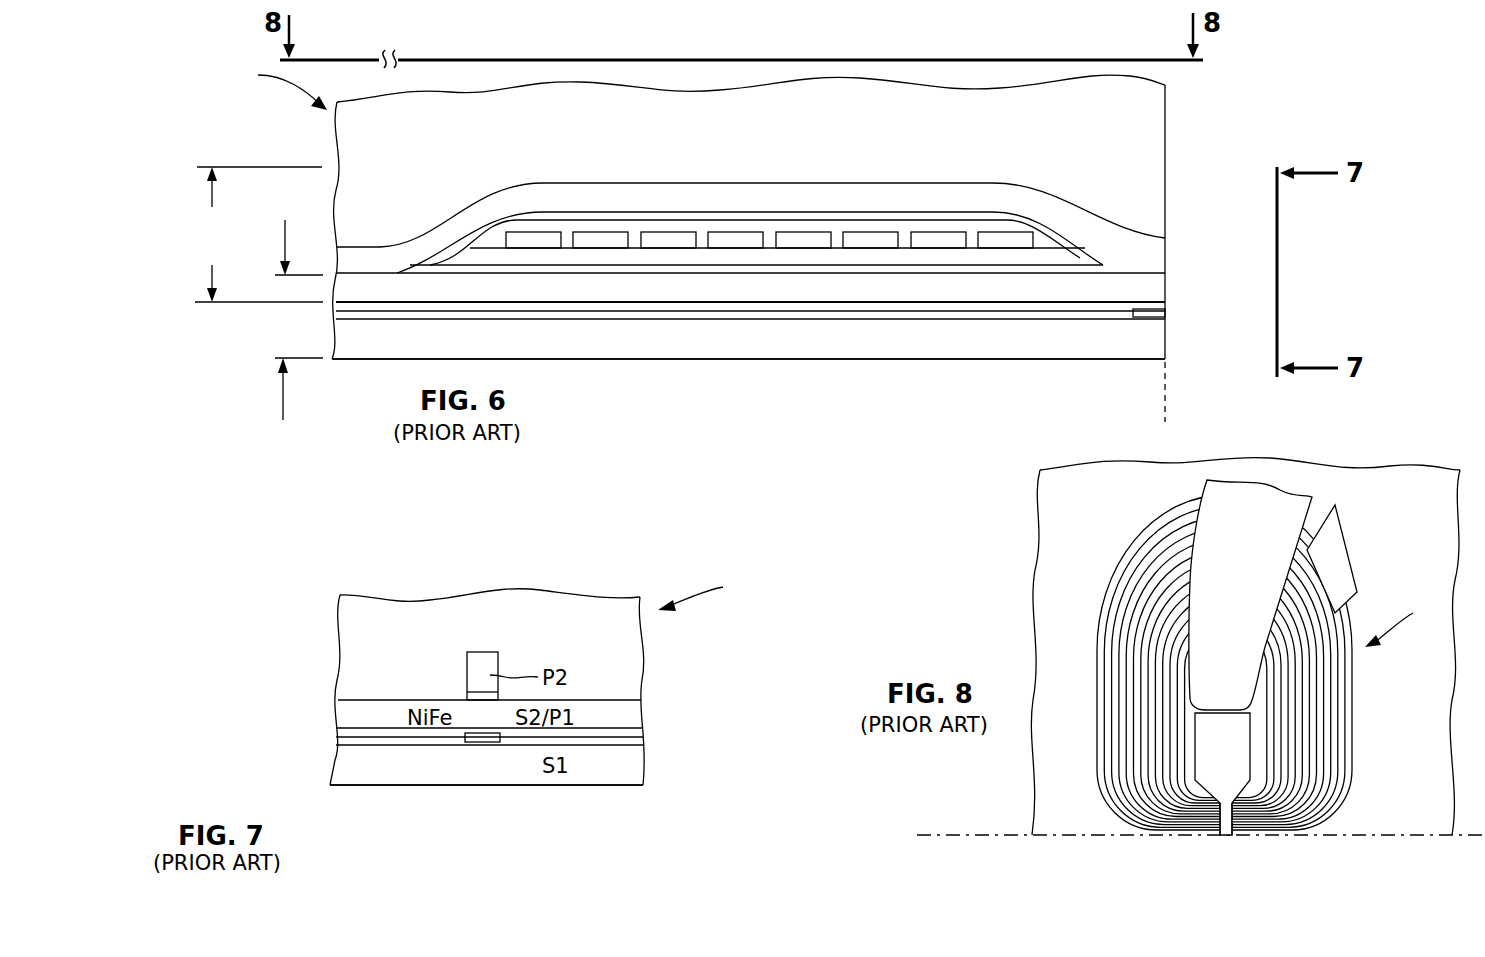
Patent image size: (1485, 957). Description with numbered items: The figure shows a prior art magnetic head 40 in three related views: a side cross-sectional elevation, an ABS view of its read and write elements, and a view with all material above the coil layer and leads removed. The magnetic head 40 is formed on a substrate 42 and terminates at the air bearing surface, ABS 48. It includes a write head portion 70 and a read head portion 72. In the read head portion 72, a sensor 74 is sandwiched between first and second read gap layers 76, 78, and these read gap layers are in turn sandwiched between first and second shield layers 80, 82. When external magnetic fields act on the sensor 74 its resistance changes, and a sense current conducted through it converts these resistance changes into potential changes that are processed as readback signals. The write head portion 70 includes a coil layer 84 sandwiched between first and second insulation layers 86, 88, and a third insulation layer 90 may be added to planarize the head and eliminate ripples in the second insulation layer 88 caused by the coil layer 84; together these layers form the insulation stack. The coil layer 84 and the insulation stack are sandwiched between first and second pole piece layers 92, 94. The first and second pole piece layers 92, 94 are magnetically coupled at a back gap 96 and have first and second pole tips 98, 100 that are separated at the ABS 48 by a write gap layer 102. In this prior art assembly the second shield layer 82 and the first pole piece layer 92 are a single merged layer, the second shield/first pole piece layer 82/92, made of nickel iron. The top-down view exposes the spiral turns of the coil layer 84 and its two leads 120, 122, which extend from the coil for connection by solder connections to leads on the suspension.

In FIG. 6, the magnetic head 40 is at (276, 87).
In FIG. 7, the magnetic head 40 is at (705, 590).
In FIG. 8, the magnetic head 40 is at (1245, 646).
In FIG. 6, the substrate / overcoat layer 42 is at (1150, 145).
In FIG. 7, the substrate / overcoat layer 42 is at (343, 622).
In FIG. 6, the air bearing surface (ABS) 48 is at (1206, 392).
In FIG. 8, the air bearing surface (ABS) 48 is at (968, 835).
In FIG. 6, the write head portion 70 is at (242, 234).
In FIG. 6, the read head portion 72 is at (288, 430).
In FIG. 6, the sensor 74 is at (1165, 312).
In FIG. 7, the sensor 74 is at (480, 742).
In FIG. 6, the first read gap layer 76 is at (818, 320).
In FIG. 7, the first read gap layer 76 is at (392, 746).
In FIG. 6, the second read gap layer 78 is at (782, 300).
In FIG. 7, the second read gap layer 78 is at (602, 732).
In FIG. 6, the first shield layer 80 is at (898, 343).
In FIG. 7, the first shield layer 80 is at (632, 767).
In FIG. 6, the second shield layer 82 is at (750, 354).
In FIG. 7, the second shield layer 82 is at (420, 715).
In FIG. 6, the first pole piece layer 92 is at (1005, 290).
In FIG. 7, the first pole piece layer 92 is at (338, 717).
In FIG. 6, the coil layer 84 is at (802, 236).
In FIG. 8, the coil layer 84 is at (1323, 735).
In FIG. 6, the first insulation layer 86 is at (673, 258).
In FIG. 6, the second insulation layer 88 is at (1048, 240).
In FIG. 6, the third insulation layer 90 is at (574, 213).
In FIG. 6, the second pole piece layer 94 is at (902, 193).
In FIG. 8, the second pole piece layer 94 is at (1233, 765).
In FIG. 6, the back gap 96 is at (372, 273).
In FIG. 6, the first pole tip 98 is at (1165, 292).
In FIG. 6, the second pole tip 100 is at (1158, 248).
In FIG. 7, the second pole tip 100 is at (490, 658).
In FIG. 8, the second pole tip 100 is at (1222, 838).
In FIG. 6, the write gap layer 102 is at (1165, 270).
In FIG. 7, the write gap layer 102 is at (480, 695).
In FIG. 8, the lead 120 is at (1252, 590).
In FIG. 8, the lead 122 is at (1342, 550).